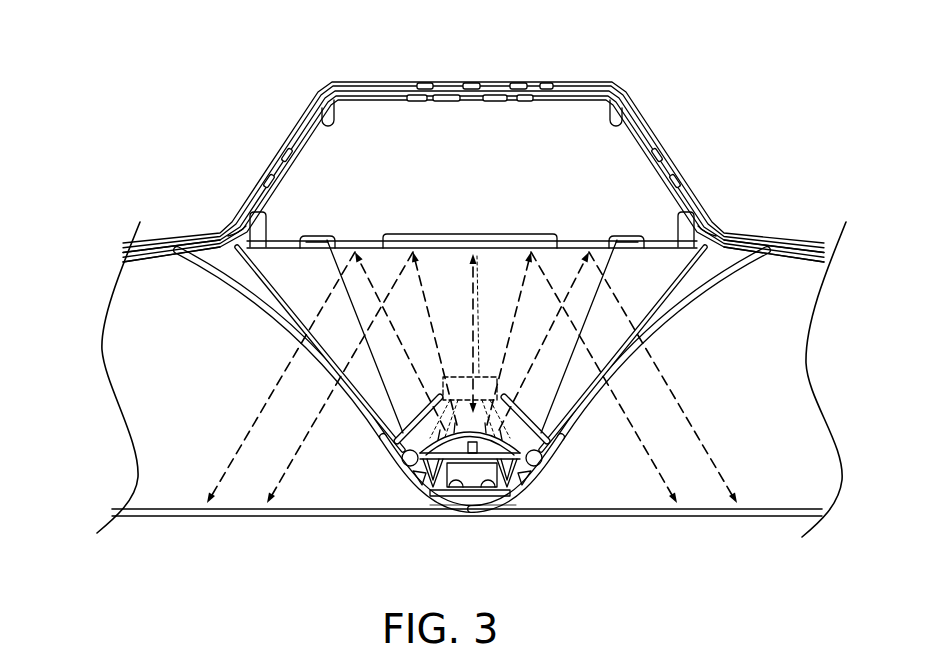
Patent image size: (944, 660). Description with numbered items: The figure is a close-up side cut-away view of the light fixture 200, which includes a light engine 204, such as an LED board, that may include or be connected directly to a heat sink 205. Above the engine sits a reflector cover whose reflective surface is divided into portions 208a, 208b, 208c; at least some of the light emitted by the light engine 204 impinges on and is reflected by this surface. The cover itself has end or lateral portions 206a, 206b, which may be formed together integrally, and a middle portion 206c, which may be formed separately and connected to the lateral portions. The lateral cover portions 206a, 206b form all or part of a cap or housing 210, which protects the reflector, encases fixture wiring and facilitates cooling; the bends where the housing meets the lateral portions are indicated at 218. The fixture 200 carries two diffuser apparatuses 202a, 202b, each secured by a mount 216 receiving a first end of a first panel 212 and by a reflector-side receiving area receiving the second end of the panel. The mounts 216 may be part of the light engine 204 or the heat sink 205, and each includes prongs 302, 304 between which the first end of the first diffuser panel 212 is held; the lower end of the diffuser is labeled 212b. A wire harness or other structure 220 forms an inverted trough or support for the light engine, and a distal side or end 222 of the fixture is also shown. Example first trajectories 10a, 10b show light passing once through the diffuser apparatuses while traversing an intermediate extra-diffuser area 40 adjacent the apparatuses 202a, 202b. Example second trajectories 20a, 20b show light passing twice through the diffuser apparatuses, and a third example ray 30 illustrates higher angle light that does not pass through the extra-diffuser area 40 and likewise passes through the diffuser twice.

The light fixture 200 is at (172, 67).
The housing 210 is at (367, 100).
The roof rail bend 218 is at (224, 220).
The lateral cover portion 206a is at (200, 236).
The lateral cover portion 206b is at (742, 240).
The middle cover portion 206c is at (573, 247).
The third example ray 30 is at (470, 250).
The intermediate area 40 is at (505, 250).
The first trajectory 10a is at (368, 250).
The first trajectory 10b is at (577, 250).
The diffuser apparatus 202a is at (244, 276).
The diffuser apparatus 202b is at (682, 242).
The reflective surface portion 208a is at (136, 272).
The reflective surface portion 208b is at (803, 272).
The reflective surface portion 208c is at (282, 262).
The wire harness 220 is at (575, 412).
The prong 302 is at (538, 420).
The mount 216 is at (397, 478).
The prong 304 is at (545, 484).
The housing bottom 212b is at (537, 497).
The first panel 212 is at (290, 338).
The light engine 204 is at (400, 405).
The heat sink 205 is at (433, 511).
The second trajectory 20a is at (240, 440).
The second trajectory 20b is at (670, 383).
The distal end 222 is at (742, 463).